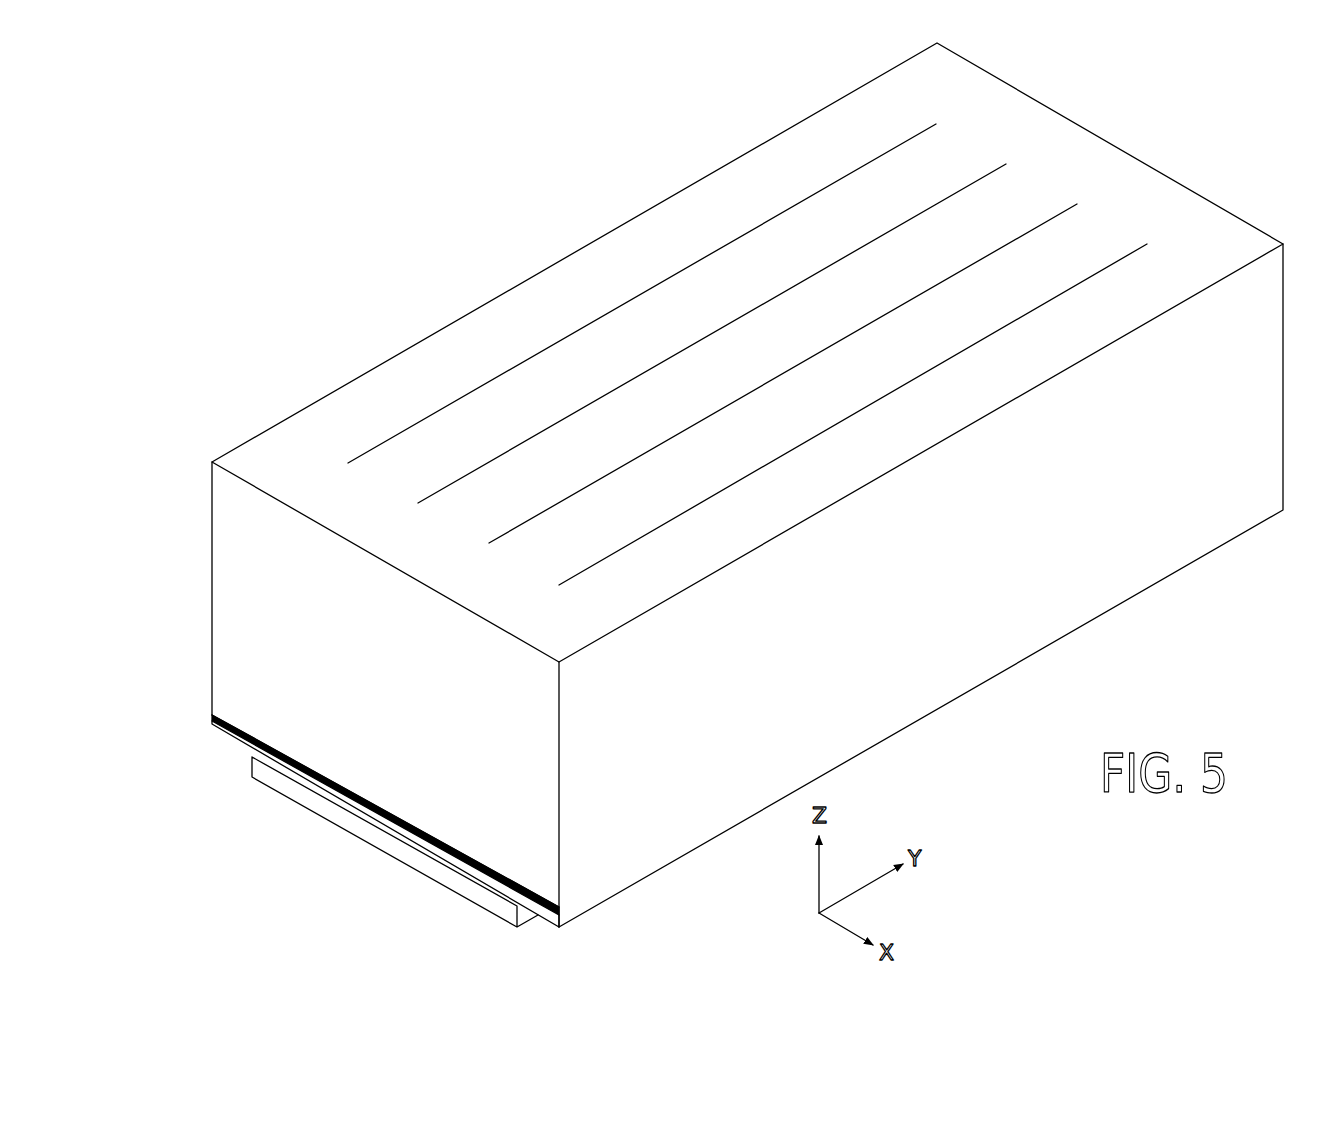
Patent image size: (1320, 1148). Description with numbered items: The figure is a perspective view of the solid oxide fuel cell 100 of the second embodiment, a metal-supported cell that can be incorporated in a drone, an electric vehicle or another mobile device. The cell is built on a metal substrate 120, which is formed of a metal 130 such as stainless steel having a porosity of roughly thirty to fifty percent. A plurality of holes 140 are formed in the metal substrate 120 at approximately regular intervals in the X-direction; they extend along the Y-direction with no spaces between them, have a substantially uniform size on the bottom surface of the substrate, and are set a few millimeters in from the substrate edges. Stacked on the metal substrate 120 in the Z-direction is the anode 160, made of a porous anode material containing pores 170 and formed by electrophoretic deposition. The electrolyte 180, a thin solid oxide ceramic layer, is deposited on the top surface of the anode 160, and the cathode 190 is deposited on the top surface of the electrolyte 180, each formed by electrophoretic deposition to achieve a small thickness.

The solid oxide fuel cell 100 is at (700, 485).
The metal substrate 120 is at (212, 592).
The metal 130 is at (1200, 238).
The holes 140 is at (1055, 212).
The anode 160 is at (211, 715).
The pores 170 is at (356, 810).
The electrolyte 180 is at (212, 726).
The cathode 190 is at (250, 762).